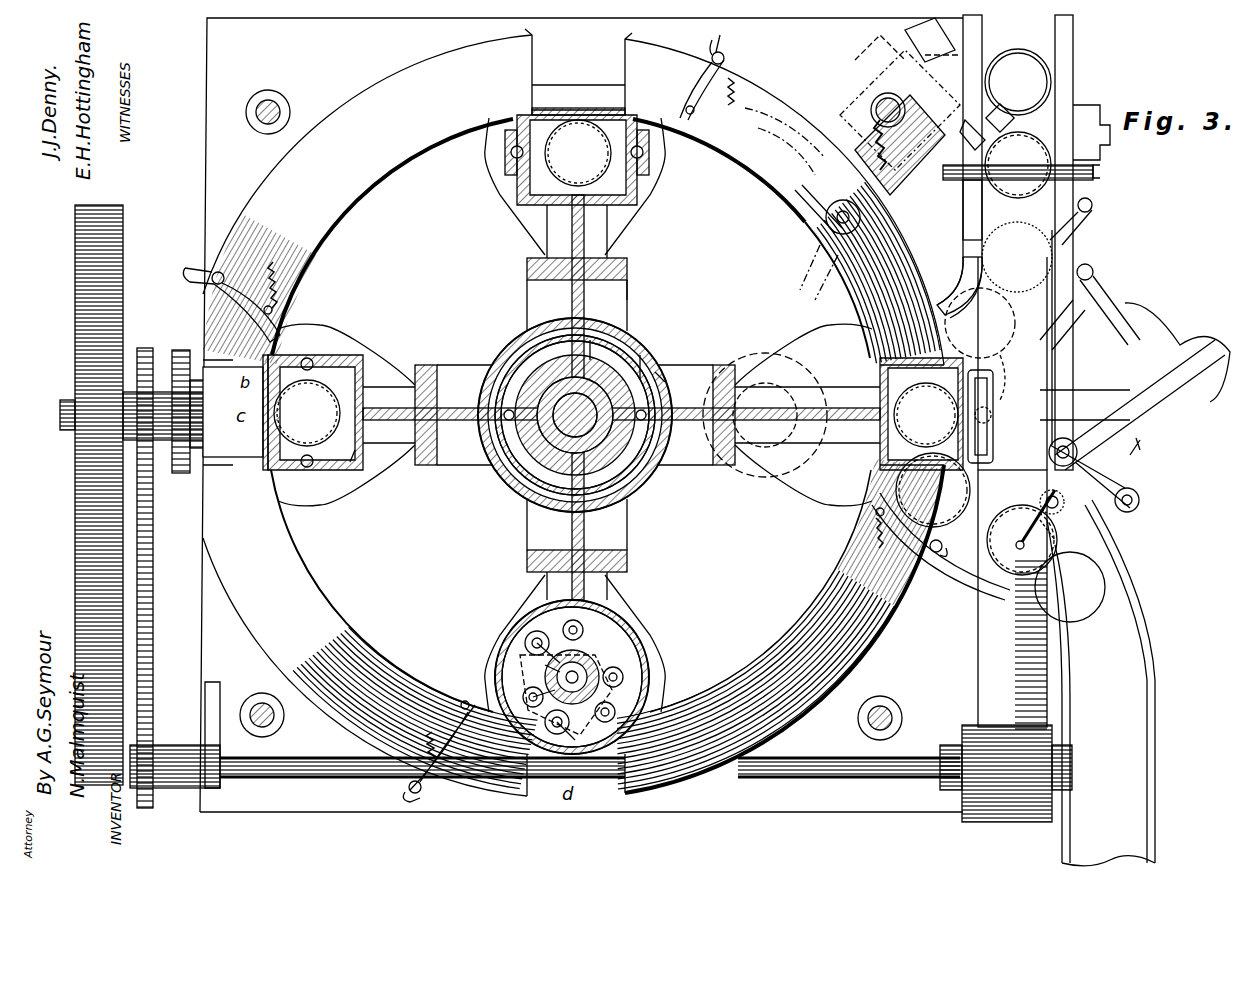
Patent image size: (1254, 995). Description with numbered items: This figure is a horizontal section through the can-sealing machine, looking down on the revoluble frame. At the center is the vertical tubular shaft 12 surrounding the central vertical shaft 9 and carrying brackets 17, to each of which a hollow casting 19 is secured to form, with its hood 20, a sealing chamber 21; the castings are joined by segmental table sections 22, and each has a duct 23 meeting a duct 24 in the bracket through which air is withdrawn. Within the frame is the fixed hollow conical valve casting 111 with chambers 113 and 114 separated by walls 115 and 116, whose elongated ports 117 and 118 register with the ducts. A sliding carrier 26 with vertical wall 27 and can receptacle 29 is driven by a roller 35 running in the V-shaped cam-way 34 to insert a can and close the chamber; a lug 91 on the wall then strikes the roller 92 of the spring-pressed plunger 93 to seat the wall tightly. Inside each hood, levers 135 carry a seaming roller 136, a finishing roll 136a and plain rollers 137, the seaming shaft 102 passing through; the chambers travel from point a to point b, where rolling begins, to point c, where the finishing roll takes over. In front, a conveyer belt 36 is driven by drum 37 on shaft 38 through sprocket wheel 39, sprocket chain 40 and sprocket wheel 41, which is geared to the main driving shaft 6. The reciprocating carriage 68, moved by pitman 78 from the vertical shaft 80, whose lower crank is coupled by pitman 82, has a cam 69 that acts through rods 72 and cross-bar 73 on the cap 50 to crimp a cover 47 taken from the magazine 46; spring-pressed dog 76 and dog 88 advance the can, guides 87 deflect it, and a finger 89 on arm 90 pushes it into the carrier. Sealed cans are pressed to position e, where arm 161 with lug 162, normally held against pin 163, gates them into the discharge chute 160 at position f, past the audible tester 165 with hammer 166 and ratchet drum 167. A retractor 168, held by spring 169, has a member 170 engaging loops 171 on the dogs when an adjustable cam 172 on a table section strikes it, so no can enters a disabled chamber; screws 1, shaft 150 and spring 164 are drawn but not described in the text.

The screw 1 is at (246, 110).
The main driving shaft 6 is at (130, 398).
The central vertical shaft 9 is at (492, 478).
The vertical tubular shaft 12 is at (515, 483).
The bracket 17 is at (586, 415).
The hollow casting 19 is at (490, 602).
The hood 20 is at (640, 632).
The sealing chamber 21 is at (586, 449).
The segmental table sections 22 is at (570, 412).
The duct 23 is at (570, 217).
The duct 24 is at (584, 294).
The sliding carrier 26 is at (255, 465).
The vertical wall 27 is at (252, 432).
The can receptacle 29 is at (1003, 372).
The V-shaped cam-way 34 is at (920, 280).
The roller 35 is at (1000, 405).
The conveyer belt 36 is at (1075, 35).
The drum or pulley 37 is at (1040, 822).
The shaft 38 is at (908, 790).
The sprocket wheel 39 is at (150, 745).
The sprocket chain 40 is at (124, 565).
The sprocket wheel 41 is at (146, 348).
The magazine 46 is at (1073, 77).
The can caps or covers 47 is at (1018, 82).
The cap 50 is at (998, 245).
The carriage 68 is at (963, 210).
The cam 69 is at (1140, 483).
The rods or pitmen 72 is at (1080, 178).
The cross-bar 73 is at (1093, 141).
The spring-pressed dog 76 is at (999, 118).
The pitman 78 is at (1108, 304).
The vertical shaft 80 is at (1049, 450).
The pitman 82 is at (1085, 337).
The guides 87 is at (1011, 303).
The spring pressed dog 88 is at (1080, 221).
The finger 89 is at (1177, 349).
The arm 90 is at (1140, 405).
The lug or cam 91 is at (810, 210).
The roller 92 is at (830, 267).
The spring-pressed plunger 93 is at (838, 202).
The shaft 102 is at (545, 667).
The hollow conical valve casting 111 is at (530, 498).
The chamber 113 is at (655, 372).
The chamber 114 is at (520, 345).
The wall 115 is at (630, 290).
The wall 116 is at (640, 470).
The elongated port 117 is at (635, 345).
The elongated port 118 is at (485, 405).
The lever 135 is at (524, 650).
The seaming roller 136 is at (560, 738).
The finishing roll 136a is at (525, 688).
The plain roller 137 is at (595, 625).
The shaft 150 is at (585, 660).
The discharge chute 160 is at (1101, 683).
The arm 161 is at (655, 78).
The lug 162 is at (955, 572).
The pin 163 is at (272, 308).
The spring 164 is at (878, 570).
The audible tester 165 is at (1060, 508).
The hammer 166 is at (1035, 520).
The ratchet drum 167 is at (1062, 522).
The retractor 168 is at (852, 75).
The spring 169 is at (898, 96).
The member 170 is at (930, 40).
The loops 171 is at (965, 125).
The adjustable cam 172 is at (785, 141).
The point a is at (572, 390).
The point b is at (577, 131).
The point c is at (298, 412).
The position e is at (933, 490).
The position f is at (1046, 563).